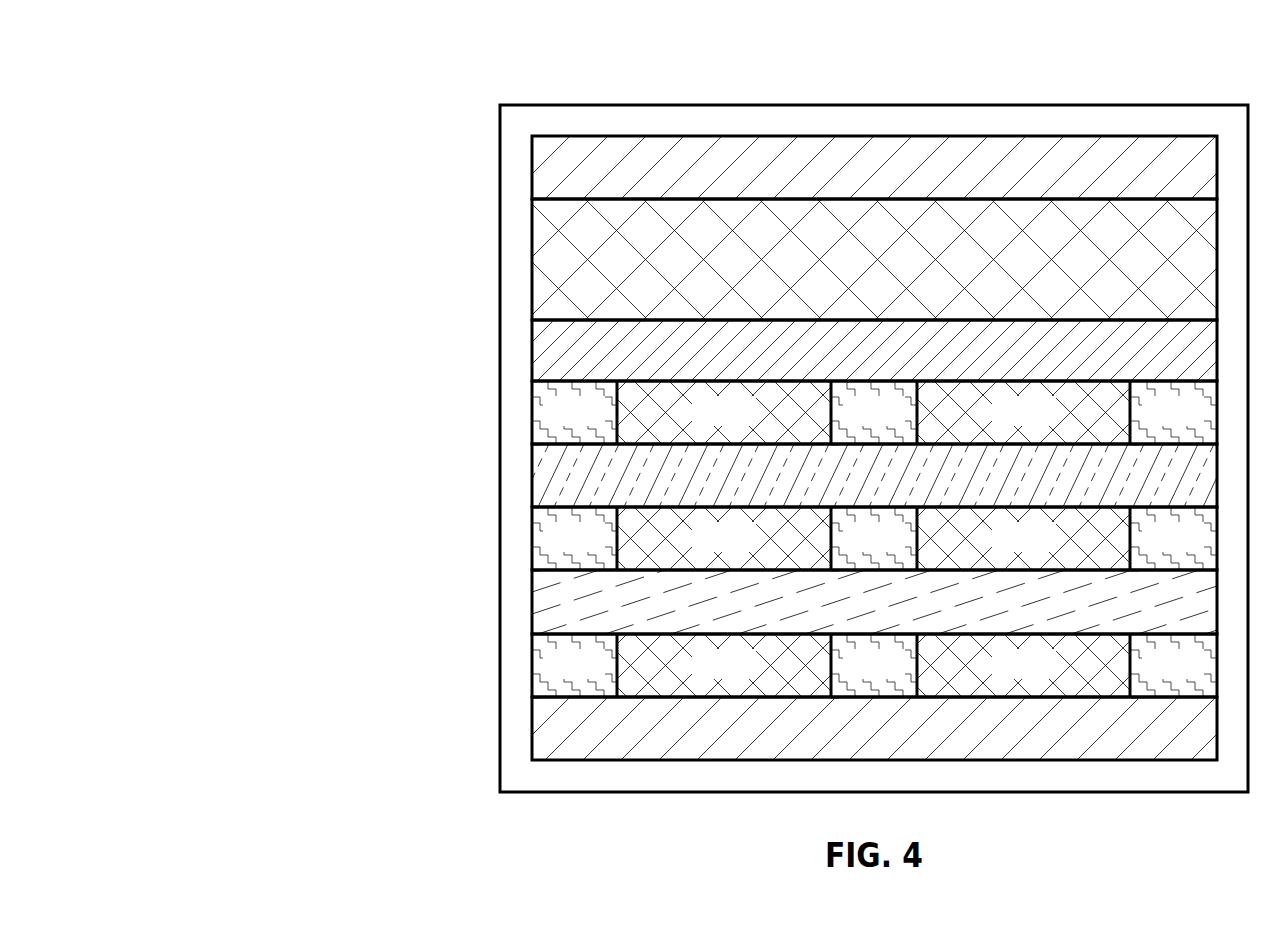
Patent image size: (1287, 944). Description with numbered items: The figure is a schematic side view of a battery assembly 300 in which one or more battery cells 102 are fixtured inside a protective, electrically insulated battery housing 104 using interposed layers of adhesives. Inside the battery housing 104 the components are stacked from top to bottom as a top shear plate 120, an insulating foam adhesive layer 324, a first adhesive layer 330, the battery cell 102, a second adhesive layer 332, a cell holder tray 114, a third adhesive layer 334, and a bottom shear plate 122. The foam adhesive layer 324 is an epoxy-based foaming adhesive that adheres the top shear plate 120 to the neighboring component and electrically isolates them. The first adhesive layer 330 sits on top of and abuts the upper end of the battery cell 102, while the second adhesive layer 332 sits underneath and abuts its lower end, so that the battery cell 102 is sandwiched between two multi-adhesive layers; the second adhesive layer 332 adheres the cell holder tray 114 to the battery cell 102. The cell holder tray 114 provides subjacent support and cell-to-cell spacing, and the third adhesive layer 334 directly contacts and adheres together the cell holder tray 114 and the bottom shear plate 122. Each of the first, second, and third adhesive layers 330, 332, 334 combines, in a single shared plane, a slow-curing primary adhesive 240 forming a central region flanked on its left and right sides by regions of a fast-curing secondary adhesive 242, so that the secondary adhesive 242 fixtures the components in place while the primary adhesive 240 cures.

The battery assembly 300 is at (282, 70).
The battery housing 104 is at (528, 104).
The top shear plate 120 is at (532, 148).
The insulating foam adhesive layer 324 is at (532, 210).
The bottom shear plate 122 is at (532, 330).
The first adhesive layer 330 is at (532, 393).
The battery cell 102 is at (532, 456).
The second adhesive layer 332 is at (532, 519).
The cell holder tray 114 is at (532, 582).
The third adhesive layer 334 is at (532, 646).
The primary adhesive 240 is at (1051, 682).
The secondary adhesive 242 is at (1201, 682).